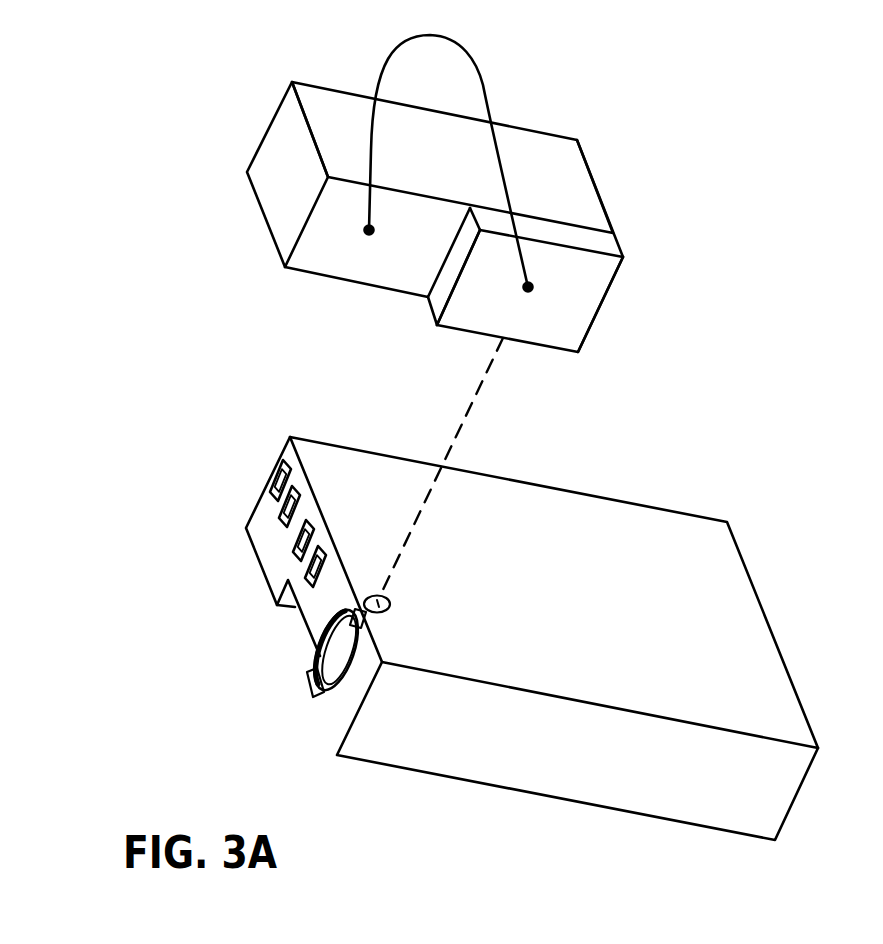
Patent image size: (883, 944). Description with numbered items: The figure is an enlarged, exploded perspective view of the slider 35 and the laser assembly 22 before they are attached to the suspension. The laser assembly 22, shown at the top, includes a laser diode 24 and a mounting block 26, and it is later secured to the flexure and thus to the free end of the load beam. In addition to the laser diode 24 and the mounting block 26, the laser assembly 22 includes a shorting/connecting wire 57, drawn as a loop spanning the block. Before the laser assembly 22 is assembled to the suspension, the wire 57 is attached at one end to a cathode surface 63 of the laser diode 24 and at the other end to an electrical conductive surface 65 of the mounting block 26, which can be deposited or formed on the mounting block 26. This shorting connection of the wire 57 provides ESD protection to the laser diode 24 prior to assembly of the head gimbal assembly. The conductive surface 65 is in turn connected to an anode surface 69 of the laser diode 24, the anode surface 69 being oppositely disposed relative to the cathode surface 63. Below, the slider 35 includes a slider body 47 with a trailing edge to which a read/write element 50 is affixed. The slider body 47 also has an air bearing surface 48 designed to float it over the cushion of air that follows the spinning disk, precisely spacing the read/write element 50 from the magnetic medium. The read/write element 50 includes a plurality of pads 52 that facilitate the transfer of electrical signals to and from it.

The laser assembly 22 is at (463, 221).
The laser diode 24 is at (570, 275).
The mounting block 26 is at (280, 103).
The slider 35 is at (504, 631).
The slider body 47 is at (542, 492).
The air bearing surface 48 is at (277, 607).
The read/write element 50 is at (311, 691).
The pads 52 is at (310, 565).
The shorting/connecting wire 57 is at (480, 75).
The cathode surface 63 is at (465, 315).
The electrical conductive surface 65 is at (310, 260).
The anode surface 69 is at (575, 226).